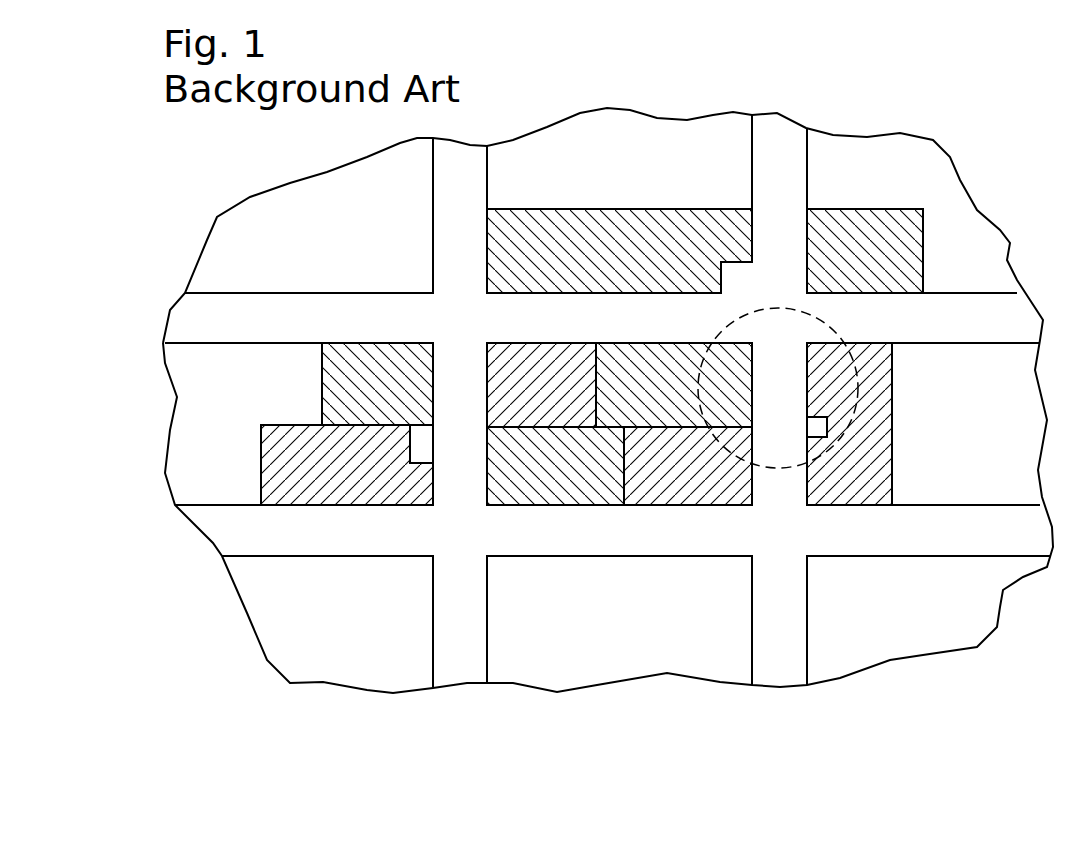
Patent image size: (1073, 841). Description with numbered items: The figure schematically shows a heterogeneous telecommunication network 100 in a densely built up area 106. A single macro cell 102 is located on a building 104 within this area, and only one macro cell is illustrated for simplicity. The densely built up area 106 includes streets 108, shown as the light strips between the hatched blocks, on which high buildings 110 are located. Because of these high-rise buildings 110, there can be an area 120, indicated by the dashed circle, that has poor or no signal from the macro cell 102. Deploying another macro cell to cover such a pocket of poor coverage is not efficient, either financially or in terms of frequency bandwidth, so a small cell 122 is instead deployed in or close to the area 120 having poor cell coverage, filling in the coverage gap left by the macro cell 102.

The heterogeneous telecommunication network 100 is at (625, 77).
The macro cell 102 is at (423, 449).
The building 104 is at (348, 485).
The densely built up area 106 is at (905, 660).
The streets 108 is at (605, 333).
The high buildings 110 is at (647, 355).
The area having poor cell coverage 120 is at (811, 317).
The small cell 122 is at (810, 428).